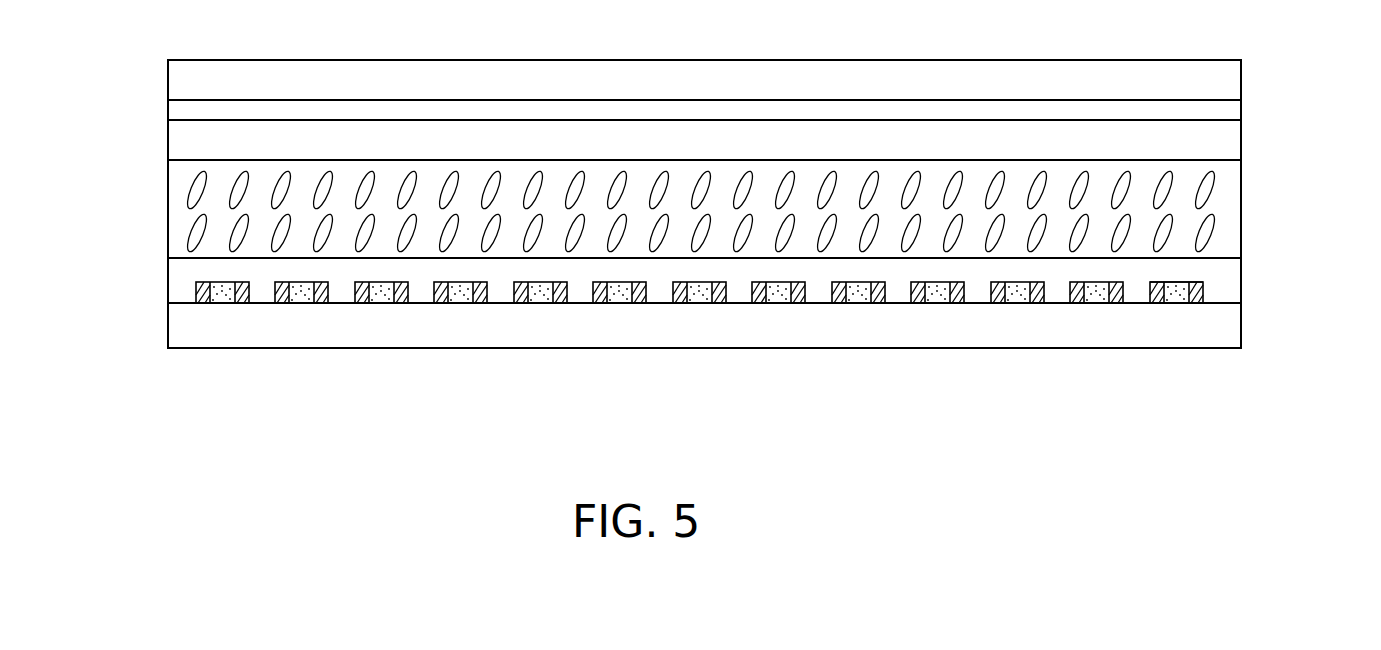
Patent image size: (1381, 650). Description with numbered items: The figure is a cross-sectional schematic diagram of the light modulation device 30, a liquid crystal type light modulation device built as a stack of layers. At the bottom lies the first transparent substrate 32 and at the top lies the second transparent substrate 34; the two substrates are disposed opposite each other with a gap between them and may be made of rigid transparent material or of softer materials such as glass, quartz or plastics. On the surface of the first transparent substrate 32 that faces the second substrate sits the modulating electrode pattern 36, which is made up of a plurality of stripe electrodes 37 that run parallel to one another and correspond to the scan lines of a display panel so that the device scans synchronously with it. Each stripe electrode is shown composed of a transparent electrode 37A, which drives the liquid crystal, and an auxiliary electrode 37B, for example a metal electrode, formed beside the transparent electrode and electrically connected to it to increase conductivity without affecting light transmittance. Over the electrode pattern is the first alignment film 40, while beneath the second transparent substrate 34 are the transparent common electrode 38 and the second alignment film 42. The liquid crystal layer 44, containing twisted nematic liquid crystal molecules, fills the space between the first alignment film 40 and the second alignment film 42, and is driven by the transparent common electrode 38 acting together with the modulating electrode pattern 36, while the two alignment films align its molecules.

The light modulation device 30 is at (103, 27).
The first transparent substrate 32 is at (178, 326).
The second transparent substrate 34 is at (178, 70).
The modulating electrode pattern 36 is at (195, 293).
The stripe electrodes 37 is at (736, 296).
The transparent electrodes 37A is at (1180, 282).
The auxiliary electrodes 37B is at (1229, 311).
The transparent common electrode 38 is at (178, 110).
The first alignment film 40 is at (178, 270).
The second alignment film 42 is at (178, 142).
The liquid crystal layer 44 is at (180, 183).